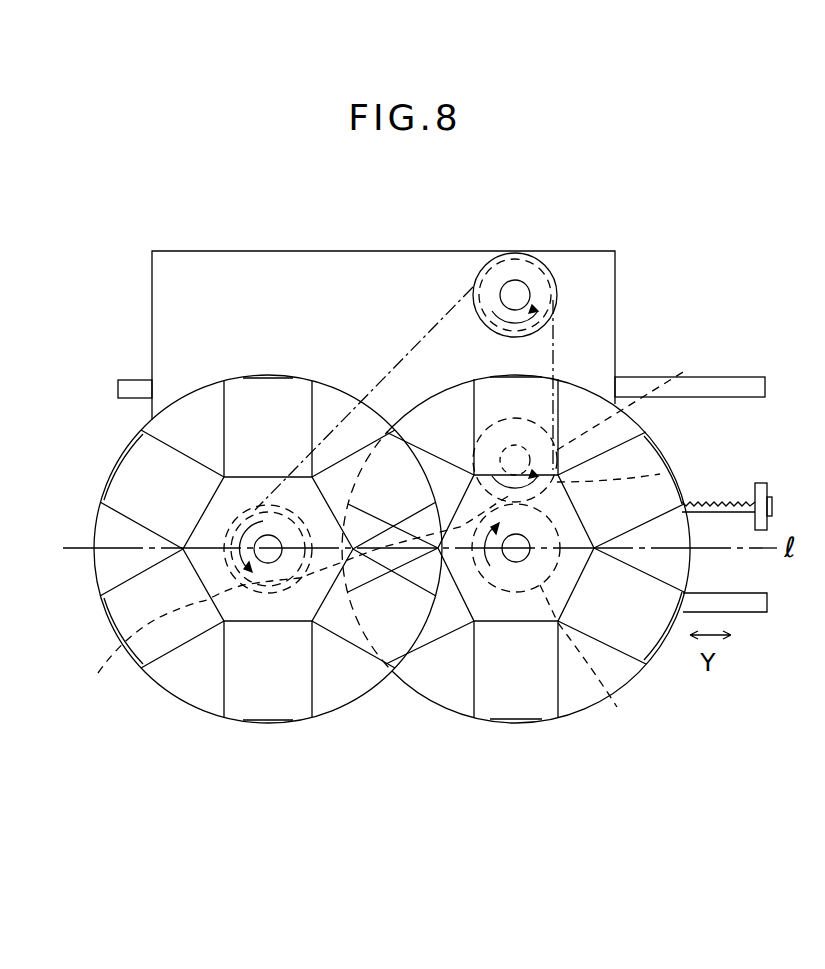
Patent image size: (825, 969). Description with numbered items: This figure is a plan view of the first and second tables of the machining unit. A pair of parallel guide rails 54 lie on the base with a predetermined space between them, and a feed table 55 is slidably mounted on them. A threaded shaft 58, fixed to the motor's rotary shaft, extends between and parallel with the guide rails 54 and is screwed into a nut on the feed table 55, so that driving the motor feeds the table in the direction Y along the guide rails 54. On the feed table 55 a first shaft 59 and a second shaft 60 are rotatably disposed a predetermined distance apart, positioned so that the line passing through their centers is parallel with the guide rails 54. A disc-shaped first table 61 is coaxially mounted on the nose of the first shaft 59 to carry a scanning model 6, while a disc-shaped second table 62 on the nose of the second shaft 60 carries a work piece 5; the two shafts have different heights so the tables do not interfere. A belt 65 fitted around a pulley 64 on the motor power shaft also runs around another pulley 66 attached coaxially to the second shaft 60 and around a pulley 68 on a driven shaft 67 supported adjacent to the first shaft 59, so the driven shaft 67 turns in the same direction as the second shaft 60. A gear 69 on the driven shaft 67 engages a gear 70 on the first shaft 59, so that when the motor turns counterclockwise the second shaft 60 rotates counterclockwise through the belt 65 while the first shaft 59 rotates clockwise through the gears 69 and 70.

The work piece 5 is at (285, 392).
The scanning model 6 is at (507, 710).
The guide rails 54 is at (733, 385).
The feed table 55 is at (317, 267).
The threaded shaft 58 is at (733, 501).
The first shaft 59 is at (527, 581).
The second shaft 60 is at (253, 546).
The first table 61 is at (449, 696).
The second table 62 is at (185, 693).
The pulley 64 is at (523, 267).
The belt 65 is at (440, 313).
The pulley 66 is at (294, 600).
The driven shaft 67 is at (530, 427).
The pulley 68 is at (633, 394).
The gear 69 is at (660, 474).
The gear 70 is at (589, 660).